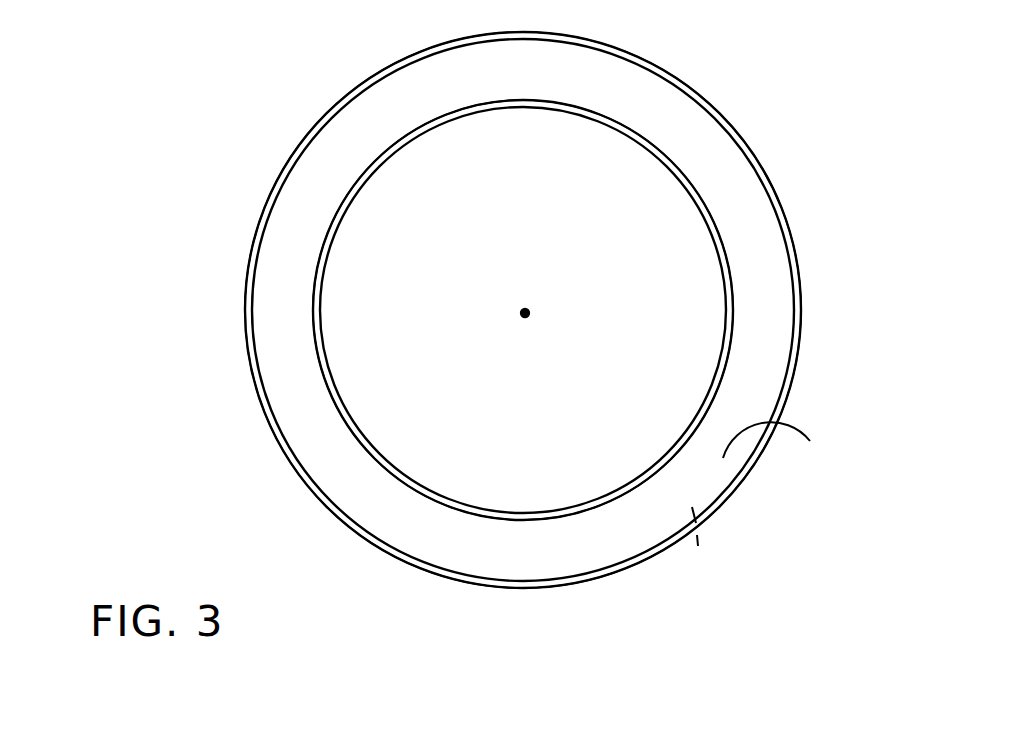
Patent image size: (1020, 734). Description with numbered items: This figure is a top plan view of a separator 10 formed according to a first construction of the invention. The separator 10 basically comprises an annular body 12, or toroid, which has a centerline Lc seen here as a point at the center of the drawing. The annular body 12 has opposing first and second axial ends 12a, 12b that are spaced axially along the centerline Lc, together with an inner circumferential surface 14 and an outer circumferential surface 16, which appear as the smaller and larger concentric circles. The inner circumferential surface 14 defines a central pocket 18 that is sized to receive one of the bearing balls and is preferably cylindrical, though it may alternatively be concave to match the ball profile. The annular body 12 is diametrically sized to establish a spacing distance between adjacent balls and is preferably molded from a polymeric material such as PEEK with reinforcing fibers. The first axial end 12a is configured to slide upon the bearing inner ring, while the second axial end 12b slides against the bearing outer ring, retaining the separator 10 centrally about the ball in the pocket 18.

The separator 10 is at (196, 52).
The annular body 12 is at (223, 328).
The first axial end 12a is at (702, 551).
The second axial end 12b is at (797, 442).
The inner circumferential surface 14 is at (338, 352).
The outer circumferential surface 16 is at (713, 90).
The central pocket 18 is at (705, 348).
The centerline Lc is at (528, 309).